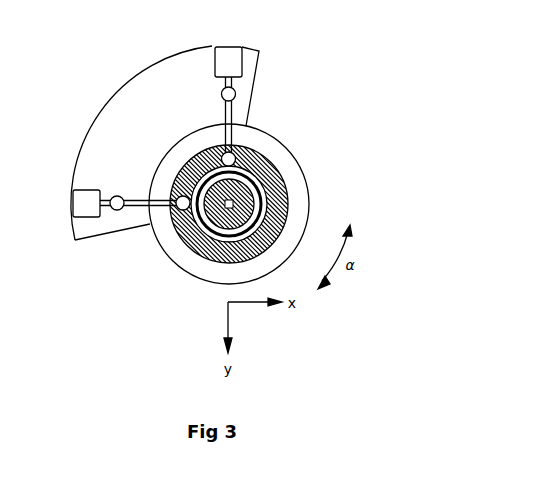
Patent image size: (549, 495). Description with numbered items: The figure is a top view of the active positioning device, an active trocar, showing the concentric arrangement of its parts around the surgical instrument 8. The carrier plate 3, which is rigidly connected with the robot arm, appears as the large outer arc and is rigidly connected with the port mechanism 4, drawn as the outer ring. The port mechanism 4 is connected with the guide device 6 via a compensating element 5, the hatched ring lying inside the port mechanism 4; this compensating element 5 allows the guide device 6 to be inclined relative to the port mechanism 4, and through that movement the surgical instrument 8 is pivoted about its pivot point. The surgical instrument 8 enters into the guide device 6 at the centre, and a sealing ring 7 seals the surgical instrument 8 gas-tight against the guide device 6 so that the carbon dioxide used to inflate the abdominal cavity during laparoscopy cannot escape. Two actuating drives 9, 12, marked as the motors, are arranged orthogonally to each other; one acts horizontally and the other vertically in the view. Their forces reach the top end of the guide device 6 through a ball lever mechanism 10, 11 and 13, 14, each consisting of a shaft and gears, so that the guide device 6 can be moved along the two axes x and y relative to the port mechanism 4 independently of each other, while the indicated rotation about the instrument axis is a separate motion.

The carrier plate 3 is at (145, 72).
The port mechanism 4 is at (297, 163).
The compensating element 5 is at (288, 187).
The guide device 6 is at (262, 207).
The sealing ring 7 is at (195, 247).
The surgical instrument 8 is at (220, 217).
The actuating drive 9 is at (77, 190).
The ball lever mechanism 10 is at (140, 208).
The ball lever mechanism 11 is at (175, 200).
The actuating drive 12 is at (242, 47).
The ball lever mechanism 13 is at (236, 120).
The ball lever mechanism 14 is at (221, 150).